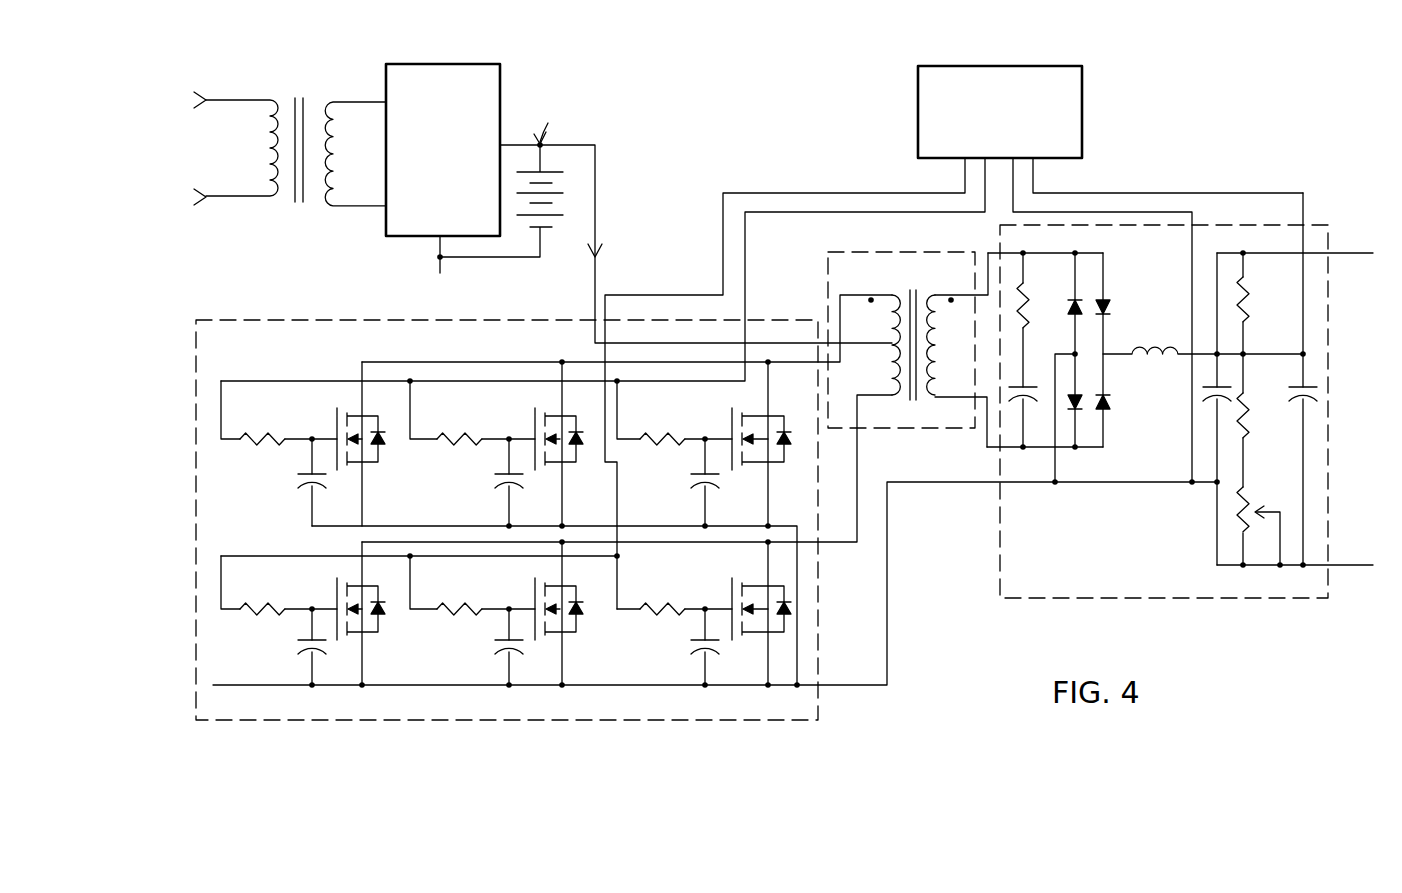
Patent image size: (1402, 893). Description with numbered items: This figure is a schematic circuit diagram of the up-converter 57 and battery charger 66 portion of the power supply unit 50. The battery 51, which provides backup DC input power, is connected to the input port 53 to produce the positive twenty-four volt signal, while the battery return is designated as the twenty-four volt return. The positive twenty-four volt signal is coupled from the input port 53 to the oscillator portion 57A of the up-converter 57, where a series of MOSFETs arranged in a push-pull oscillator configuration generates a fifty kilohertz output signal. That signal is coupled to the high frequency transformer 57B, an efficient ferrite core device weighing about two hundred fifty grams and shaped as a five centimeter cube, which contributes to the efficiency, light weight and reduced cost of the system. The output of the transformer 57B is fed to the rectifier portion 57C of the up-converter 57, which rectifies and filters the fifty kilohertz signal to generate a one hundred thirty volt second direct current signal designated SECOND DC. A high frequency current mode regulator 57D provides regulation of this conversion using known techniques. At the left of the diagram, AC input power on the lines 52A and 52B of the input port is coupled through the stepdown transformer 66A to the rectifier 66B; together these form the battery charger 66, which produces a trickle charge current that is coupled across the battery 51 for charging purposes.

The power supply unit 50 is at (1234, 153).
The battery 51 is at (552, 223).
The AC input line 52A is at (200, 94).
The AC input line 52B is at (201, 204).
The input port 53 is at (598, 250).
The up-converter 57 is at (832, 700).
The oscillator portion 57A is at (352, 318).
The high frequency transformer 57B is at (957, 250).
The rectifier portion 57C is at (1335, 237).
The high frequency current mode regulator 57D is at (1083, 120).
The battery charger 66 is at (292, 221).
The stepdown transformer 66A is at (300, 96).
The rectifier 66B is at (488, 63).